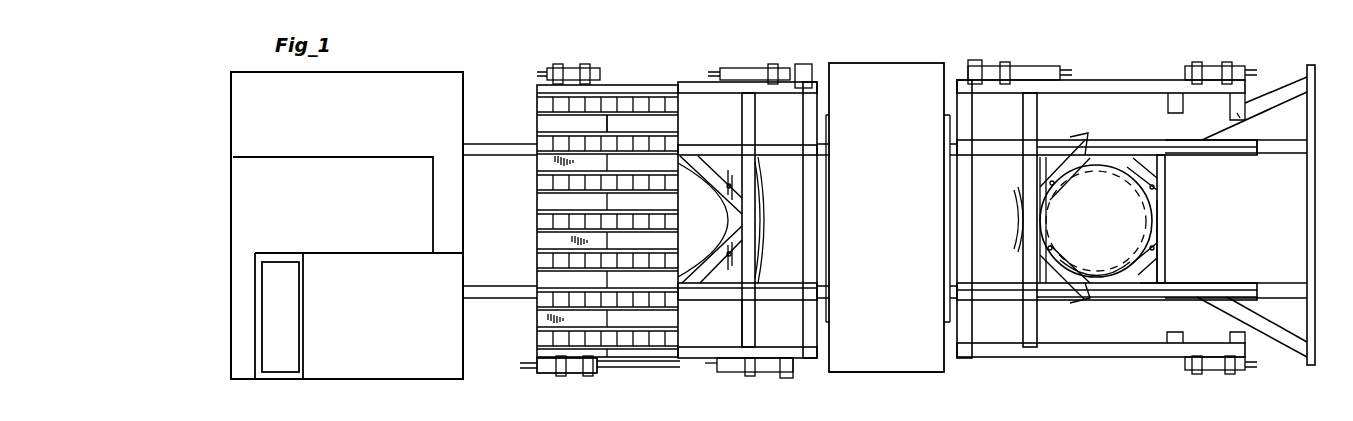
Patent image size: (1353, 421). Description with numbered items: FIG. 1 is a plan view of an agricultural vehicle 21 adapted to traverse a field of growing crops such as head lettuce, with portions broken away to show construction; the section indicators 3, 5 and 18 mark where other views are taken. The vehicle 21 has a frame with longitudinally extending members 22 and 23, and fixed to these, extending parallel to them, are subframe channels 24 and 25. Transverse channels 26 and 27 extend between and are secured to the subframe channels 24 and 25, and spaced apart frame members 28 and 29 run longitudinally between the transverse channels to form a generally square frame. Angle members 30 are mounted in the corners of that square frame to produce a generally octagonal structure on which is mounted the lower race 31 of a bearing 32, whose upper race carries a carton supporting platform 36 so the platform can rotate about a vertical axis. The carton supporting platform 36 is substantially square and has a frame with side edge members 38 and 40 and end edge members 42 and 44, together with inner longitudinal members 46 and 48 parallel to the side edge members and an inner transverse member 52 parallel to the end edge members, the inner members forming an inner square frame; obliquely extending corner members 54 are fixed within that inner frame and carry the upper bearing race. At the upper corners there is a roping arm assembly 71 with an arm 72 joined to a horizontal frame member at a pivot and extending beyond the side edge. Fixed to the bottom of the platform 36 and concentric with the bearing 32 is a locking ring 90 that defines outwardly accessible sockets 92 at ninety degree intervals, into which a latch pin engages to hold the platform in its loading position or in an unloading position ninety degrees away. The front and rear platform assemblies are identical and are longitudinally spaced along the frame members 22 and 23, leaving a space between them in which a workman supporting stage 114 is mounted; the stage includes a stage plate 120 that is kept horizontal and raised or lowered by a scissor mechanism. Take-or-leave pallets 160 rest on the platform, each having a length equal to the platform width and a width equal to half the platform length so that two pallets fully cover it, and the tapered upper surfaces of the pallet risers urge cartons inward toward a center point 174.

The section line 3- 3 is at (516, 390).
The section line 5- 5 is at (745, 160).
The section line 18- 18 is at (847, 390).
The agricultural vehicle 21 is at (220, 293).
The longitudinally extending frame member 22 is at (491, 150).
The longitudinally extending frame member 23 is at (491, 292).
The subframe channel 24 is at (1192, 140).
The subframe channel 25 is at (1180, 300).
The transverse channel 26 is at (1165, 250).
The transverse channel 27 is at (1040, 268).
The frame member 28 is at (1165, 164).
The frame member 29 is at (1165, 276).
The angle member 30 is at (1143, 187).
The lower race 31 is at (1130, 260).
The bearing 32 is at (718, 232).
The carton supporting platform 36 is at (726, 363).
The side edge member 38 is at (715, 93).
The side edge member 40 is at (694, 353).
The end edge member 42 is at (957, 337).
The end edge member 44 is at (818, 336).
The inner longitudinal member 46 is at (780, 146).
The inner longitudinal member 48 is at (702, 298).
The inner transverse member 52 is at (750, 330).
The corner member 54 is at (712, 170).
The roping arm assembly 71 is at (566, 66).
The arm 72 is at (578, 372).
The locking ring 90 is at (766, 228).
The socket 92 is at (1014, 226).
The workman supporting stage 114 is at (924, 368).
The stage plate 120 is at (902, 240).
The take-or-leave pallet 160 is at (528, 238).
The center point 174 is at (609, 125).